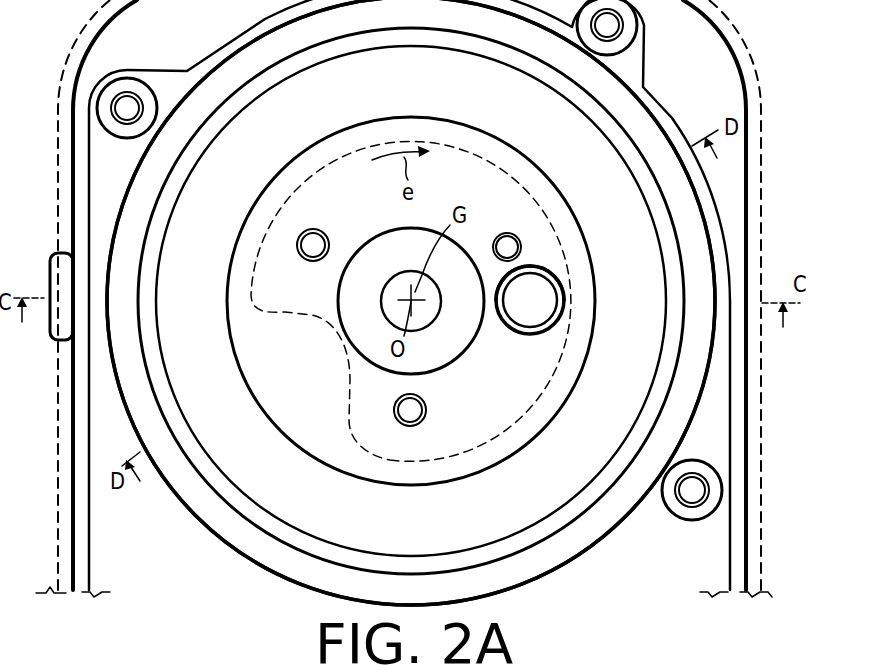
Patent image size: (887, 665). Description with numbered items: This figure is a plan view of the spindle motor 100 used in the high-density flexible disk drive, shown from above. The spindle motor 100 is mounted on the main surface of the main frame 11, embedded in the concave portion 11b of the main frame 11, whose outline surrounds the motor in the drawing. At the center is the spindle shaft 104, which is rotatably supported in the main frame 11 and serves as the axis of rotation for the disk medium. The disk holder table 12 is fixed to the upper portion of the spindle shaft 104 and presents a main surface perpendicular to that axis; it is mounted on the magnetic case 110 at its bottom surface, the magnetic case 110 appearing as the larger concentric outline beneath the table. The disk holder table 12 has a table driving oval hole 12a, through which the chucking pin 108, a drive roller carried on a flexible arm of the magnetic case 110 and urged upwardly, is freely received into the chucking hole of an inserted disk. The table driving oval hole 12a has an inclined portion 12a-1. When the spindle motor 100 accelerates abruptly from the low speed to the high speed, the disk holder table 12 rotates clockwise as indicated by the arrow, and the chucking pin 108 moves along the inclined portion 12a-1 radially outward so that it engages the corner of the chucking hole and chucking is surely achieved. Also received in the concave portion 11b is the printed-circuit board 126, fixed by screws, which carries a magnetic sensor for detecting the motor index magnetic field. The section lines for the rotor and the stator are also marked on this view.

The main frame 11 is at (753, 490).
The concave portion 11b is at (708, 107).
The disk holder table 12 is at (540, 410).
The table driving oval hole 12a is at (550, 268).
The inclined portion 12a-1 is at (518, 262).
The spindle motor 100 is at (184, 517).
The spindle shaft 104 is at (430, 315).
The chucking pin 108 is at (538, 316).
The magnetic case 110 is at (600, 525).
The printed-circuit board 126 is at (632, 60).